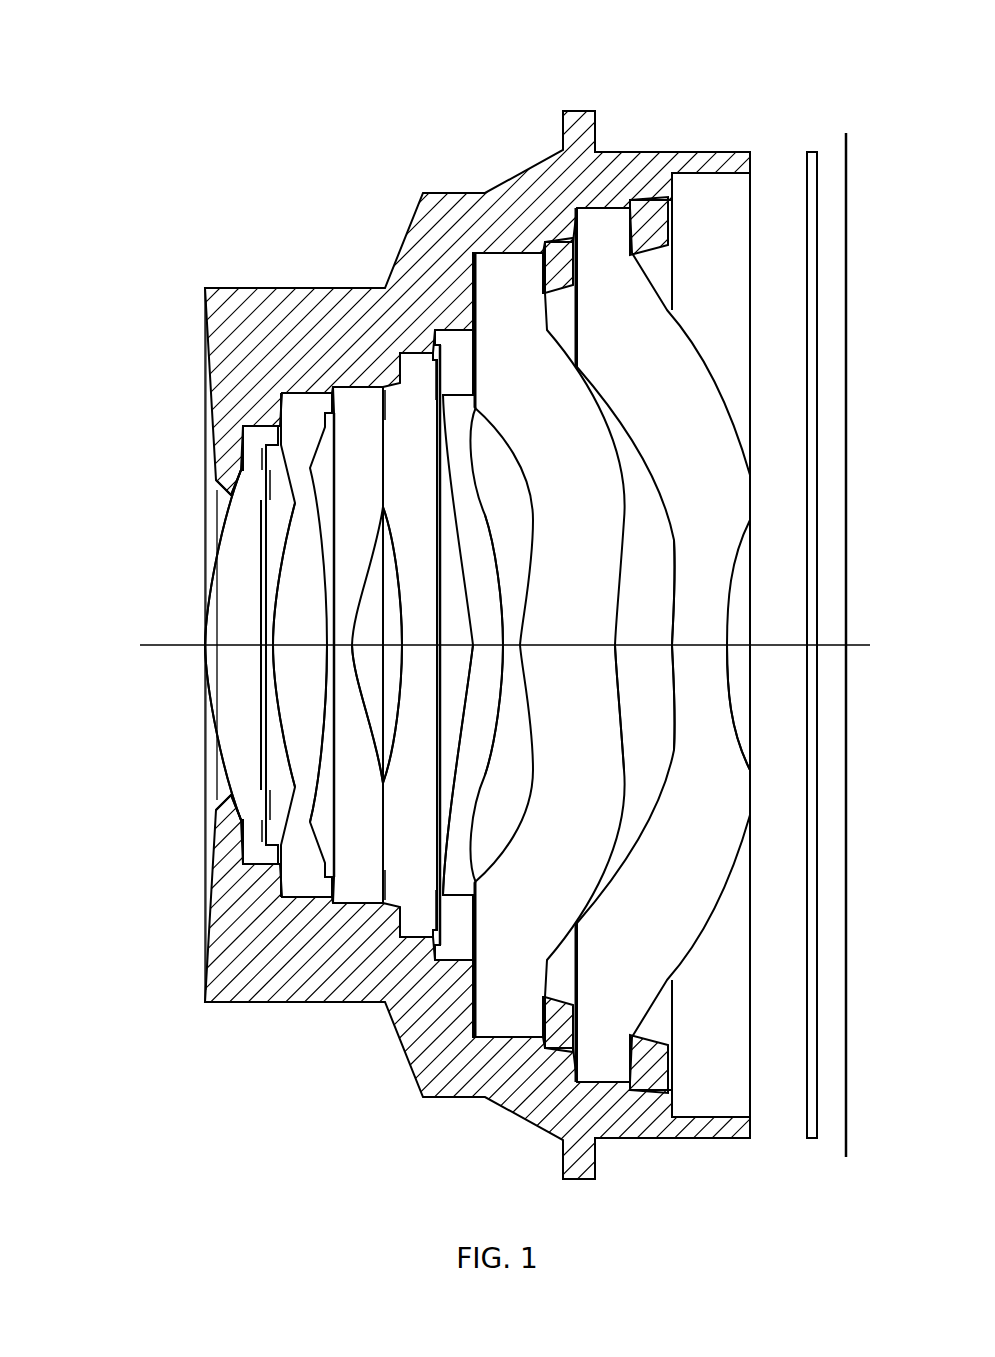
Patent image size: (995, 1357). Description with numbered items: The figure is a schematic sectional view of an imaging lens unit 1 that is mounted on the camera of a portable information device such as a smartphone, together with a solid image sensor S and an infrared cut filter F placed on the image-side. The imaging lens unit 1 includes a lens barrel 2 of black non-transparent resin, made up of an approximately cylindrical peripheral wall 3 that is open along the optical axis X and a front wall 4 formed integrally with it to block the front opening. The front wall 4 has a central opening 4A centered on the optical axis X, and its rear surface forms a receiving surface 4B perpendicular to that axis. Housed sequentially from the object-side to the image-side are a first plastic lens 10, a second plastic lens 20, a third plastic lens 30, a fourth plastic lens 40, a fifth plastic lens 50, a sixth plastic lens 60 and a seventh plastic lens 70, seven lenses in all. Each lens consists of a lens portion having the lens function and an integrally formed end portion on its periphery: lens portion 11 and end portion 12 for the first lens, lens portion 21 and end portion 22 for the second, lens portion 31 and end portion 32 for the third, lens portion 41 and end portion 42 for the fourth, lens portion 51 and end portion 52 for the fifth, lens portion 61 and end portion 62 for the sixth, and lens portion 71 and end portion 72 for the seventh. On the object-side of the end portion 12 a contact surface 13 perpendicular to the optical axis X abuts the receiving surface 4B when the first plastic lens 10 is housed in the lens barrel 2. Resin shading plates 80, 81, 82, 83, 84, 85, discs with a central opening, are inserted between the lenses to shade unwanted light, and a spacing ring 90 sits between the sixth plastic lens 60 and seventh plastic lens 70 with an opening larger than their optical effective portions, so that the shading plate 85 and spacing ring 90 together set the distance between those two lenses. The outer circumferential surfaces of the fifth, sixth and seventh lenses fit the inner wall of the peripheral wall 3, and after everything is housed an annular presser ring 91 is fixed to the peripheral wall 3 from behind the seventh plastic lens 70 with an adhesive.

The imaging lens unit 1 is at (134, 68).
The lens barrel 2 is at (291, 269).
The peripheral wall 3 is at (713, 156).
The front wall 4 is at (212, 920).
The opening 4A is at (230, 790).
The receiving surface 4B is at (232, 492).
The first plastic lens 10 is at (257, 430).
The lens portion 11 is at (228, 652).
The end portion 12 is at (250, 825).
The contact surface 13 is at (247, 457).
The second plastic lens 20 is at (308, 405).
The lens portion 21 is at (292, 657).
The end portion 22 is at (303, 880).
The third plastic lens 30 is at (350, 395).
The lens portion 31 is at (338, 660).
The end portion 32 is at (358, 887).
The fourth plastic lens 40 is at (420, 365).
The lens portion 41 is at (417, 659).
The end portion 42 is at (413, 907).
The fifth plastic lens 50 is at (460, 338).
The lens portion 51 is at (487, 658).
The end portion 52 is at (457, 937).
The sixth plastic lens 60 is at (512, 268).
The lens portion 61 is at (600, 658).
The end portion 62 is at (510, 1007).
The seventh plastic lens 70 is at (600, 221).
The lens portion 71 is at (700, 658).
The end portion 72 is at (600, 1053).
The shading plate 80 is at (262, 465).
The shading plate 81 is at (265, 505).
The shading plate 82 is at (388, 361).
The shading plate 83 is at (387, 940).
The shading plate 84 is at (468, 947).
The shading plate 85 is at (557, 1017).
The spacing ring 90 is at (565, 251).
The presser ring 91 is at (648, 203).
The infrared cut filter F is at (808, 150).
The solid image sensor S is at (846, 131).
The optical axis X is at (162, 645).